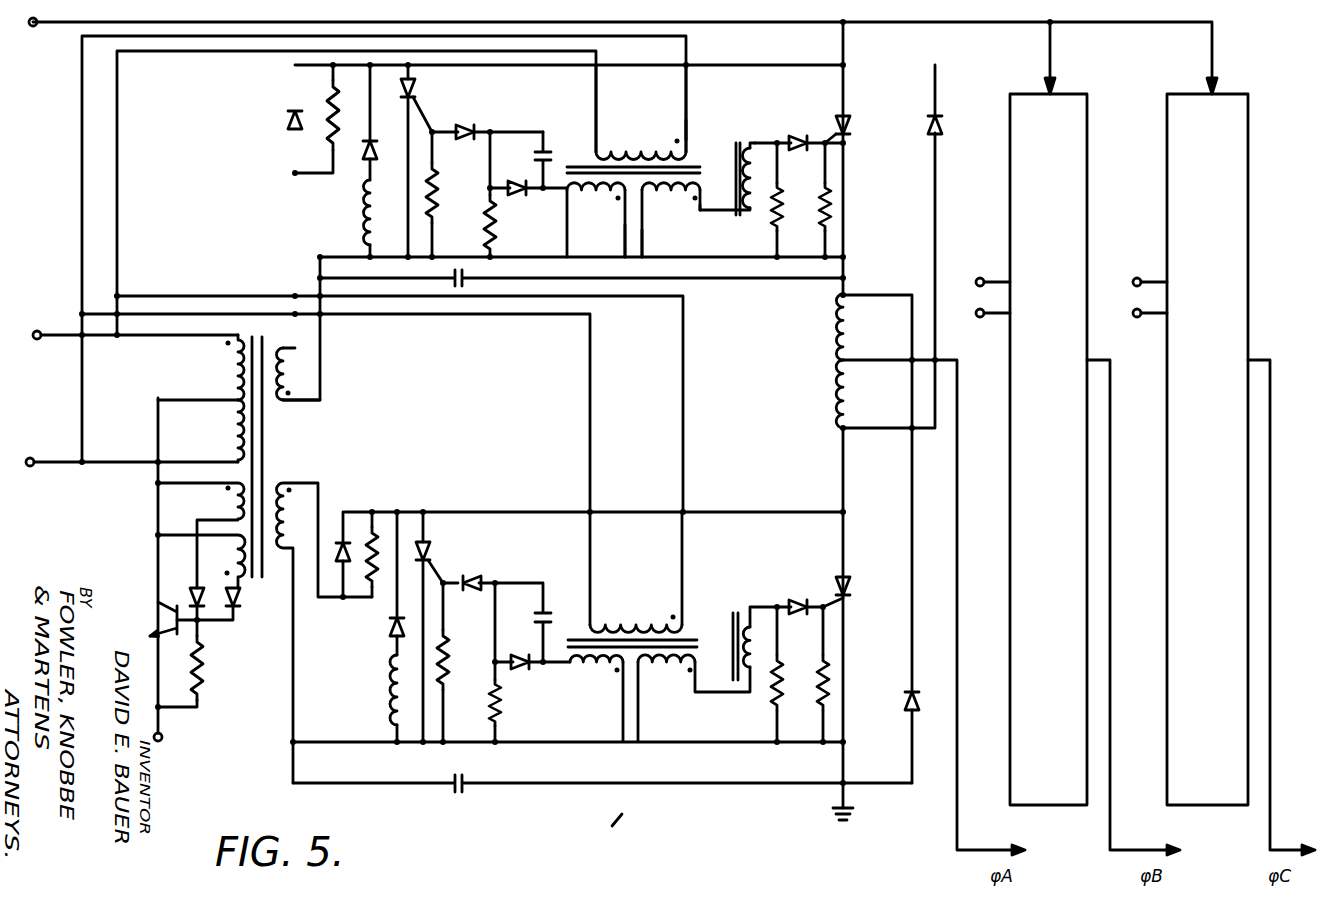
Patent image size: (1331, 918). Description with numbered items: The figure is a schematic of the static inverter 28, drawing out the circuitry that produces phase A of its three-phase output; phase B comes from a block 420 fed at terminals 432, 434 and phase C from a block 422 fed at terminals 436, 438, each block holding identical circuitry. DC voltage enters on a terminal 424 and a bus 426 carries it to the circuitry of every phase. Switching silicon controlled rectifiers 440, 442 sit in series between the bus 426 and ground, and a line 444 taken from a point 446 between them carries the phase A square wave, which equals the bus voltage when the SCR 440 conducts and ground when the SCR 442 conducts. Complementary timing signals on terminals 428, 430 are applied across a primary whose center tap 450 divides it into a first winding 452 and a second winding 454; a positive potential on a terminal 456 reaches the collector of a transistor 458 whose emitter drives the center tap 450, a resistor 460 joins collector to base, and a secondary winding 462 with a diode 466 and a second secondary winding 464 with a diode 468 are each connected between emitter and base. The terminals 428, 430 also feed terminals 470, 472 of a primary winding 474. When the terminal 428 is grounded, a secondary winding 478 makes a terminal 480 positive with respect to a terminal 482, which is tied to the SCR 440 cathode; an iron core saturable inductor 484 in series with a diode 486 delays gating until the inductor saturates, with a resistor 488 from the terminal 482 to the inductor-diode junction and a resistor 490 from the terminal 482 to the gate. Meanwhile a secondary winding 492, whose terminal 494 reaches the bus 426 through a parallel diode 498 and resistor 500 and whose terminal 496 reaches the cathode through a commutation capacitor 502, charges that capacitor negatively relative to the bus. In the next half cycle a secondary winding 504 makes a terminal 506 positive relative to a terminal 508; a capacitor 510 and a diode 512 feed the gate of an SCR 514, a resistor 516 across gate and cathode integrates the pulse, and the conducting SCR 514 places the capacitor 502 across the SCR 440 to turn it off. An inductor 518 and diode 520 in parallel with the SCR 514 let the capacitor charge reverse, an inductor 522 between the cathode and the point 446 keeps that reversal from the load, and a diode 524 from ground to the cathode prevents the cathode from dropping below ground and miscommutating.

The static inverter 28 is at (603, 828).
The block 420 is at (1052, 808).
The block 422 is at (1195, 808).
The terminal 424 is at (30, 27).
The bus 426 is at (935, 25).
The terminal 428 is at (48, 325).
The terminal 430 is at (45, 452).
The terminal 432 is at (988, 270).
The terminal 434 is at (977, 316).
The terminal 436 is at (1145, 270).
The terminal 438 is at (1134, 316).
The switching silicon controlled rectifier 440 is at (838, 116).
The switching silicon controlled rectifier 442 is at (838, 578).
The line 444 is at (955, 828).
The point 446 is at (847, 363).
The center tap 450 is at (234, 399).
The first winding 452 is at (228, 368).
The second winding 454 is at (226, 432).
The terminal 456 is at (162, 737).
The transistor 458 is at (166, 613).
The resistor 460 is at (203, 668).
The secondary winding 462 is at (226, 503).
The second secondary winding 464 is at (230, 549).
The diode 466 is at (192, 592).
The diode 468 is at (241, 598).
The terminal 470 is at (641, 112).
The terminal 472 is at (688, 127).
The primary winding 474 is at (655, 142).
The secondary winding 478 is at (657, 197).
The terminal 480 is at (704, 222).
The terminal 482 is at (646, 224).
The iron core saturable inductor 484 is at (750, 216).
The diode 486 is at (796, 137).
The resistor 488 is at (781, 219).
The resistor 490 is at (822, 190).
The secondary winding 492 is at (297, 378).
The terminal 494 is at (290, 347).
The terminal 496 is at (290, 403).
The diode 498 is at (288, 120).
The resistor 500 is at (338, 100).
The commutation capacitor 502 is at (466, 273).
The secondary winding 504 is at (584, 206).
The terminal 506 is at (523, 196).
The terminal 508 is at (614, 230).
The capacitor 510 is at (548, 148).
The diode 512 is at (468, 128).
The SCR 514 is at (418, 93).
The resistor 516 is at (440, 190).
The inductor 518 is at (365, 218).
The diode 520 is at (368, 164).
The inductor 522 is at (836, 314).
The diode 524 is at (916, 707).